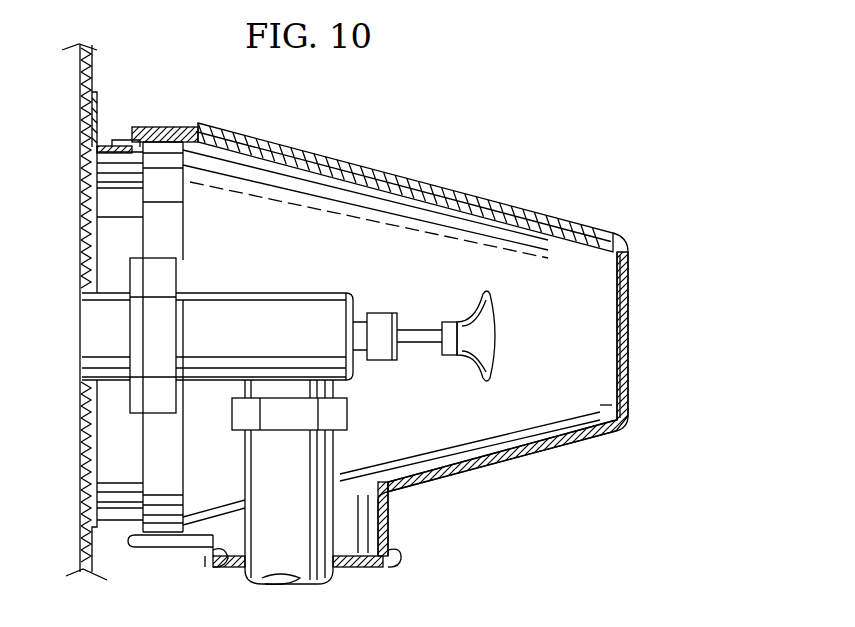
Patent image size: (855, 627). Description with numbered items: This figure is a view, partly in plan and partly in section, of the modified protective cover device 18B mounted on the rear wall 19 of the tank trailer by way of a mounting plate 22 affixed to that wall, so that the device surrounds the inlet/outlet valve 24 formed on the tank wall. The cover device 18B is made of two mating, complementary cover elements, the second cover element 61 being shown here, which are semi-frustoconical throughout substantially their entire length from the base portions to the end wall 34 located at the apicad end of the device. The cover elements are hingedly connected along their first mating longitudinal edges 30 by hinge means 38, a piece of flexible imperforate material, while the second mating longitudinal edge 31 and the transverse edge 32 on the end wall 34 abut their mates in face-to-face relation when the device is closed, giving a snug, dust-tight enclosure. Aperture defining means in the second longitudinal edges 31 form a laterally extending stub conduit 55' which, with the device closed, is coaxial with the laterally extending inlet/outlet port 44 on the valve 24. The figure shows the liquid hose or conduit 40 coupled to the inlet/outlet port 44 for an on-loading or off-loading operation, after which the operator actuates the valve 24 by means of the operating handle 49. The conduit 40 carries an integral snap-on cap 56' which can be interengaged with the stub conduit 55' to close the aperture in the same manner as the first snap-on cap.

The rear wall 19 is at (84, 78).
The mounting plate 22 is at (97, 108).
The protective cover device 18B is at (396, 352).
The hinge means 38 is at (553, 233).
The first mating longitudinal edge 30 is at (573, 245).
The mating transverse edge 32 is at (620, 306).
The end wall 34 is at (627, 337).
The second mating complementary cover element 61 is at (597, 393).
The operating handle 49 is at (497, 347).
The inlet/outlet port 44 is at (332, 387).
The liquid hose or conduit 40 is at (257, 473).
The inlet/outlet valve 24 is at (267, 282).
The second mating longitudinal edge 31 is at (460, 468).
The stub conduit 55' is at (415, 519).
The snap-on cap 56' is at (303, 558).